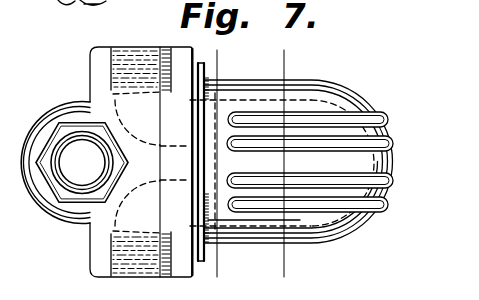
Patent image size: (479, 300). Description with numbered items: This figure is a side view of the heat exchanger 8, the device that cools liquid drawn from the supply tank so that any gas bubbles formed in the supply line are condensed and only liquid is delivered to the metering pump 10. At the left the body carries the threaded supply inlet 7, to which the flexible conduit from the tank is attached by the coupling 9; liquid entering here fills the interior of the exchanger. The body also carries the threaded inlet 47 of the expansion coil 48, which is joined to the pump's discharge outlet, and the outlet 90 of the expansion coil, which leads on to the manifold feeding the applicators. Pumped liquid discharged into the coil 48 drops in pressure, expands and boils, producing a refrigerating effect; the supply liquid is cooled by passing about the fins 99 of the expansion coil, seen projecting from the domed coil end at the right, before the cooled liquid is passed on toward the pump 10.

The supply inlet 7 is at (50, 150).
The heat exchanger 8 is at (81, 226).
The threaded inlet of expansion coil 47 is at (125, 50).
The outlet of expansion coil 90 is at (111, 261).
The expansion coil 48 is at (312, 100).
The fins 99 is at (376, 148).
The metering pump 10 is at (240, 55).
The coupling 9 is at (313, 55).